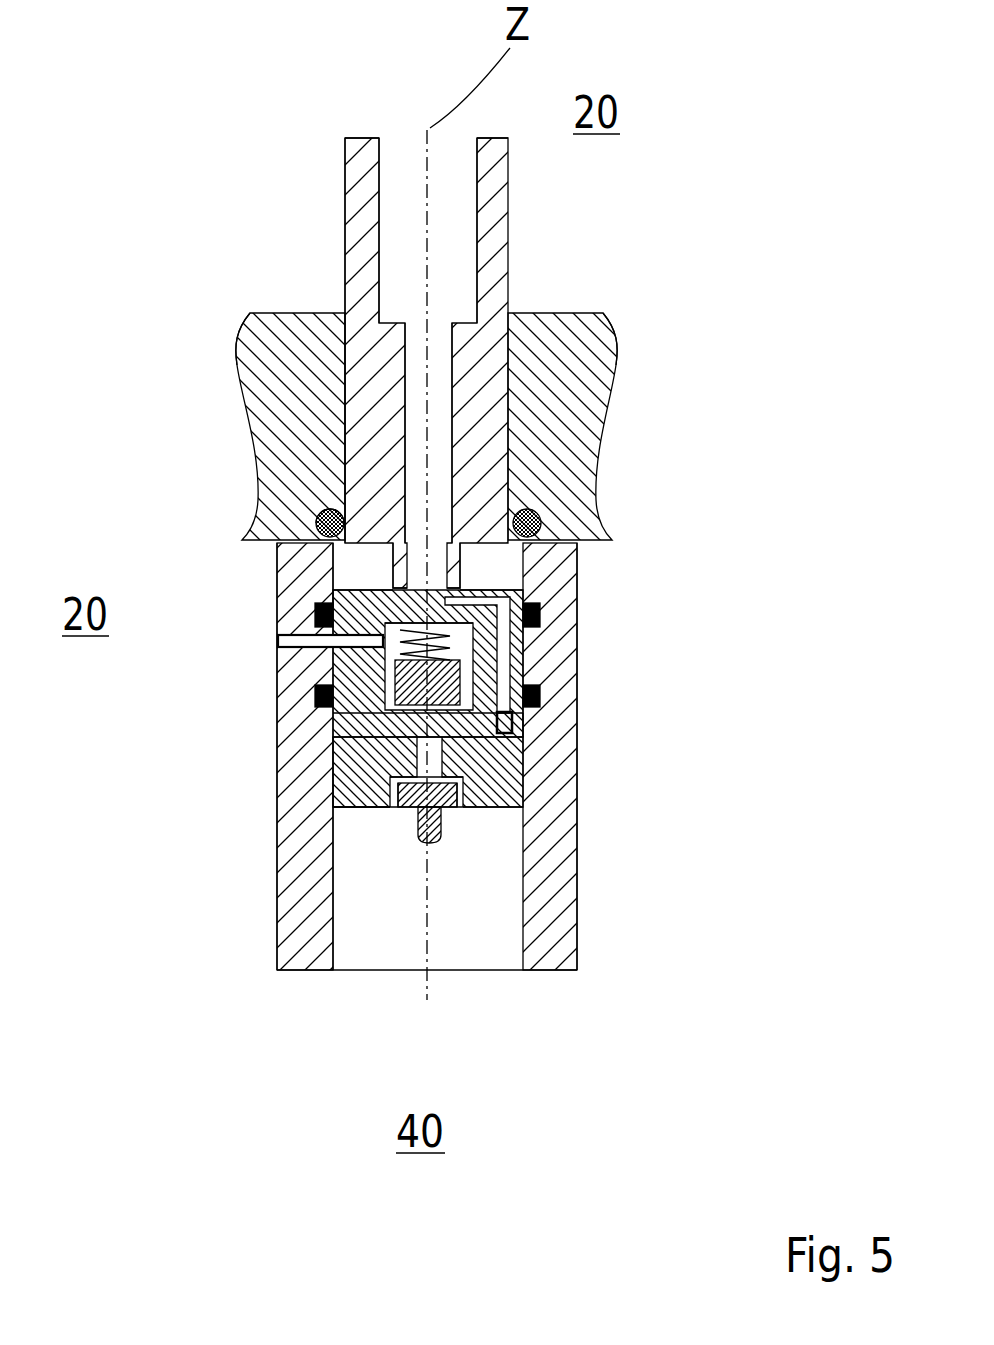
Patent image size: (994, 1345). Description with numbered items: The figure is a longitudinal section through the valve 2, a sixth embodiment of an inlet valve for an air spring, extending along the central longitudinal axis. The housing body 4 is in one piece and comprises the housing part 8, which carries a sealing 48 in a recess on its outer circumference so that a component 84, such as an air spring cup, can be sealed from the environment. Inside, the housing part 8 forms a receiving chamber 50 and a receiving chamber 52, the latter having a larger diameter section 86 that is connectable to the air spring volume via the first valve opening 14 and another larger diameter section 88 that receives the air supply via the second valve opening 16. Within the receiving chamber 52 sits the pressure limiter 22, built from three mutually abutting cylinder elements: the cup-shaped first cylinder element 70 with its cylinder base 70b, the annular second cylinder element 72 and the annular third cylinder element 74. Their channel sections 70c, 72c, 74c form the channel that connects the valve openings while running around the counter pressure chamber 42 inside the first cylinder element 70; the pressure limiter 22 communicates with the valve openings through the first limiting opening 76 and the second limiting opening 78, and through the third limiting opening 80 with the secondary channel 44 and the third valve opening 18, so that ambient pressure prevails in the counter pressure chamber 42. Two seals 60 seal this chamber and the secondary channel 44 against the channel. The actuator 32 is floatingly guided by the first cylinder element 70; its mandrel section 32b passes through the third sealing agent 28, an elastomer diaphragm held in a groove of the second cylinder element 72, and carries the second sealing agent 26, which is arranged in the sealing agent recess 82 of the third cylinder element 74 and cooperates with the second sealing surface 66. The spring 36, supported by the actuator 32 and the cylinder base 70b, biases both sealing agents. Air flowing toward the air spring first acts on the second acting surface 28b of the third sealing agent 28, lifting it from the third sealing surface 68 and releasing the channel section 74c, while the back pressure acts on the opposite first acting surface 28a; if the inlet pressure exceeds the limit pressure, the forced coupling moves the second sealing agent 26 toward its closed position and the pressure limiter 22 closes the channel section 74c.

The valve 2 is at (343, 212).
The housing body 4 is at (345, 275).
The second housing part 8 is at (300, 565).
The first valve opening 14 is at (523, 940).
The second valve opening 16 is at (470, 282).
The third valve opening 18 is at (277, 642).
The pressure limiter 22 is at (455, 812).
The second sealing agent 26 is at (447, 815).
The third sealing agent 28 is at (335, 748).
The first acting surface 28a is at (327, 705).
The second acting surface 28b is at (340, 795).
The actuator 32 is at (512, 638).
The mandrel section 32b is at (463, 807).
The spring 36 is at (475, 640).
The counter pressure chamber 42 is at (398, 590).
The secondary channel 44 is at (322, 513).
The sealing 48 is at (383, 622).
The receiving chamber 50 is at (470, 228).
The receiving chamber 52 is at (337, 913).
The seals 60 is at (330, 610).
The second sealing surface 66 is at (340, 840).
The third sealing surface 68 is at (540, 787).
The first cylinder element 70 is at (575, 590).
The cylinder base 70b is at (317, 618).
The channel section 70c is at (465, 575).
The second cylinder element 72 is at (523, 720).
The channel section 72c is at (520, 757).
The third cylinder element 74 is at (520, 762).
The channel section 74c is at (523, 813).
The first limiting opening 76 is at (536, 512).
The second limiting opening 78 is at (395, 835).
The third limiting opening 80 is at (340, 652).
The sealing agent recess 82 is at (412, 818).
The component 84 is at (328, 506).
The larger diameter section 86 is at (392, 818).
The larger diameter section 88 is at (472, 182).